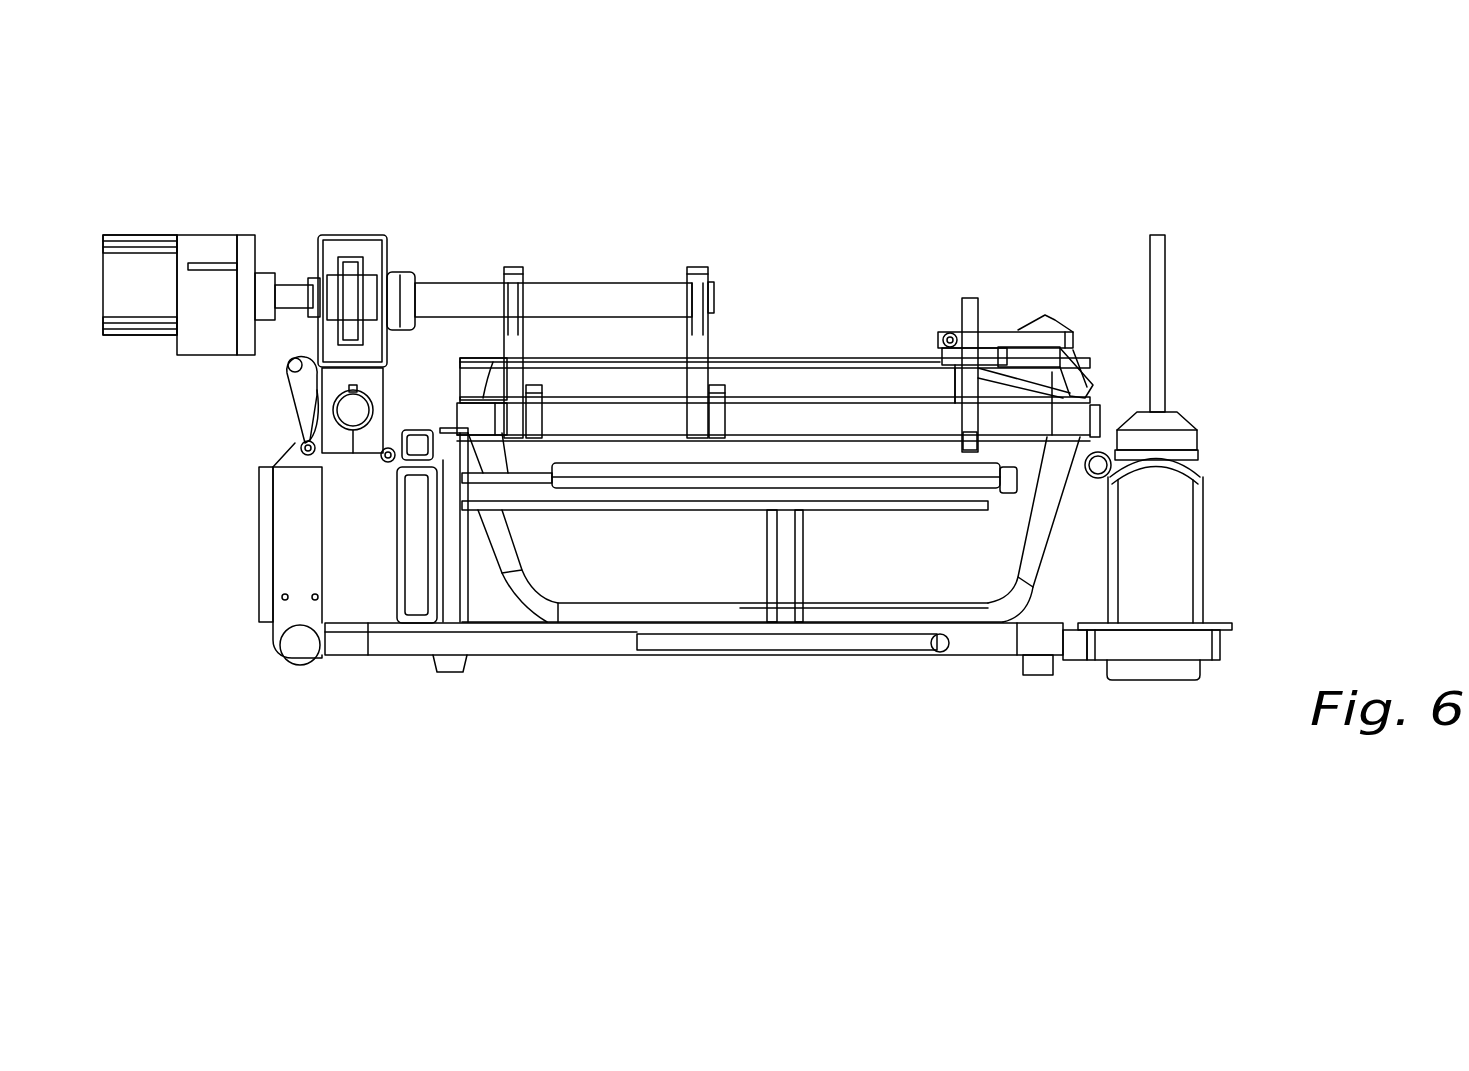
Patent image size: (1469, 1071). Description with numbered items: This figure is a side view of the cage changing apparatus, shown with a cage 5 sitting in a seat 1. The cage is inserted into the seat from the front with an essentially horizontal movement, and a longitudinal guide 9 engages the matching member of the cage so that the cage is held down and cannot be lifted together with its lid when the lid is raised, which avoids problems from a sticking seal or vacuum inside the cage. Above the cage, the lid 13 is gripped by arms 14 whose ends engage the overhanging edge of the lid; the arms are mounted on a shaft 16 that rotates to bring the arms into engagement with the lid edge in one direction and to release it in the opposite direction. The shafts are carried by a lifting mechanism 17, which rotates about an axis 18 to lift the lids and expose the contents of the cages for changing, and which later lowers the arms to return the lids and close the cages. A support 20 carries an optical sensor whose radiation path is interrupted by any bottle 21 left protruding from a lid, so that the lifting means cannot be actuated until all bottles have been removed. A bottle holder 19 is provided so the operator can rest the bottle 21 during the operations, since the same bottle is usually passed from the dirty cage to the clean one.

The seat 1 is at (1043, 612).
The cage 5 is at (760, 525).
The longitudinal guide 9 is at (993, 478).
The lid 13 is at (822, 383).
The arm 14 is at (518, 353).
The shaft 16 is at (462, 302).
The lifting mechanism 17 is at (330, 353).
The axis 18 is at (357, 410).
The bottle holder 19 is at (1198, 650).
The support 20 is at (1024, 345).
The bottle 21 is at (1144, 429).